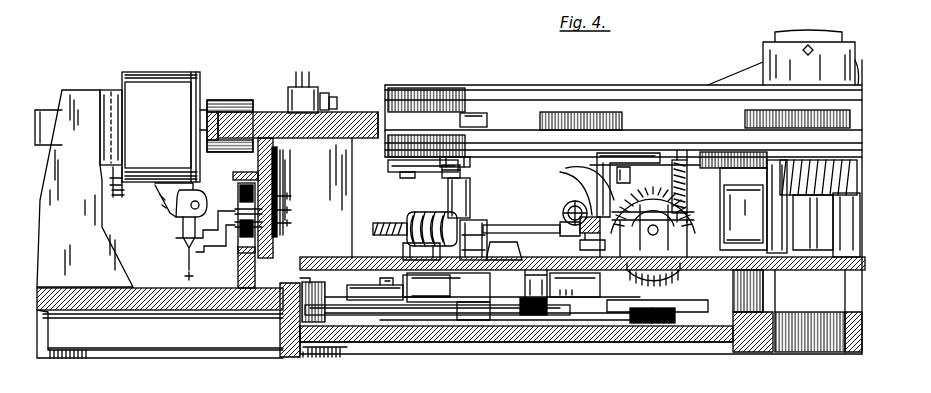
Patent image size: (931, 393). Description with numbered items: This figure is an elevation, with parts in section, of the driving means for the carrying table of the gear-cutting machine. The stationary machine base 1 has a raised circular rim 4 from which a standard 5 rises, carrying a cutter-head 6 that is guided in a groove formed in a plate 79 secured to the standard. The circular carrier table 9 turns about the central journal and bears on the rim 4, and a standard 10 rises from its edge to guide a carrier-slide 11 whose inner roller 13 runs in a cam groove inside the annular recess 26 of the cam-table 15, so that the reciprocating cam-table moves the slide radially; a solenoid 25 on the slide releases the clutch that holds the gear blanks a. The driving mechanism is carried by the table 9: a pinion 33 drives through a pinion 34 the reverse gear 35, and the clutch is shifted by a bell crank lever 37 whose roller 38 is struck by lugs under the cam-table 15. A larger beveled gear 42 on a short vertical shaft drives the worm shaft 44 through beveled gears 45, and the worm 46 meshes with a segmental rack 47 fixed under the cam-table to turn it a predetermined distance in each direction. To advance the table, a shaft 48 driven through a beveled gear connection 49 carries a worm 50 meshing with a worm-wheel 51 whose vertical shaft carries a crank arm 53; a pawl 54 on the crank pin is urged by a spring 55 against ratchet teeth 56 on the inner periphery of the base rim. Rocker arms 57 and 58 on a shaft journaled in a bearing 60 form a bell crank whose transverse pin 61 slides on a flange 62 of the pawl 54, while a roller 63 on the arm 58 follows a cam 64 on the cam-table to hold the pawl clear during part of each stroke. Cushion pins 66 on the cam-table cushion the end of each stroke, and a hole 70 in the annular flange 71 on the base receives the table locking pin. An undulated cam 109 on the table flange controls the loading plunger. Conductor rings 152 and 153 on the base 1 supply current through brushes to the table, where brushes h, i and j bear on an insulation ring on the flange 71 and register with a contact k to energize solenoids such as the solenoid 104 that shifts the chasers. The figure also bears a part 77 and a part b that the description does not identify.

The stationary machine base 1 is at (572, 342).
The raised circular rim portion 4 is at (145, 305).
The standard 5 is at (84, 188).
The cutter-head 6 is at (158, 121).
The carrier table 9 is at (715, 262).
The standard 10 is at (345, 178).
The carrier-slide 11 is at (380, 125).
The roller 13 is at (473, 113).
The cam-table 15 is at (647, 100).
The solenoid 25 is at (312, 79).
The annular recess 26 is at (417, 110).
The second pinion 33 is at (580, 205).
The pinion 34 is at (570, 262).
The second gear 35 is at (622, 190).
The bell crank lever 37 is at (620, 160).
The roller 38 is at (676, 160).
The larger beveled gear 42 is at (680, 265).
The horizontal worm shaft 44 is at (776, 175).
The beveled gears 45 is at (716, 160).
The worm 46 is at (818, 165).
The segmental rack 47 is at (845, 195).
The shaft 48 is at (508, 228).
The beveled gear connection 49 is at (627, 265).
The worm 50 is at (428, 224).
The worm-wheel 51 is at (385, 228).
The crank arm 53 is at (447, 300).
The pawl 54 is at (380, 315).
The spring 55 is at (534, 314).
The ratchet teeth 56 is at (302, 310).
The lower rocker arm 57 is at (355, 285).
The upper rocker arm 58 is at (462, 180).
The bearing 60 is at (470, 210).
The transverse pin 61 is at (347, 292).
The flange 62 is at (408, 312).
The roller 63 is at (468, 163).
The cam 64 is at (410, 170).
The cushion pins 66 is at (280, 190).
The hole 70 is at (243, 250).
The annular flange 71 is at (243, 290).
The motor housing 77 is at (162, 62).
The plate 79 is at (108, 90).
The solenoid 104 is at (190, 210).
The undulated cam 109 is at (240, 175).
The conductor ring 152 is at (640, 323).
The conductor ring 153 is at (665, 323).
The gear blanks a is at (225, 100).
The conductor b is at (236, 212).
The contact brush h is at (292, 223).
The contact brush i is at (292, 210).
The contact brush j is at (292, 196).
The contact k is at (236, 226).